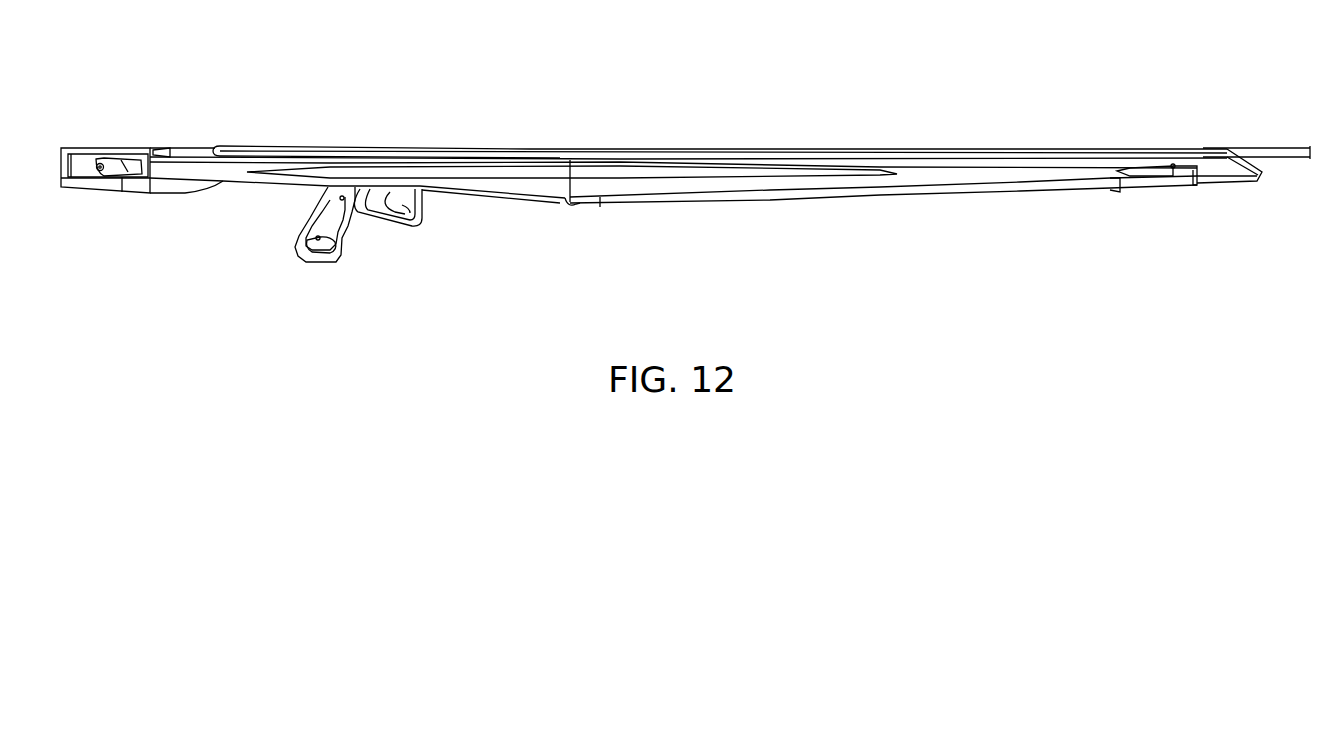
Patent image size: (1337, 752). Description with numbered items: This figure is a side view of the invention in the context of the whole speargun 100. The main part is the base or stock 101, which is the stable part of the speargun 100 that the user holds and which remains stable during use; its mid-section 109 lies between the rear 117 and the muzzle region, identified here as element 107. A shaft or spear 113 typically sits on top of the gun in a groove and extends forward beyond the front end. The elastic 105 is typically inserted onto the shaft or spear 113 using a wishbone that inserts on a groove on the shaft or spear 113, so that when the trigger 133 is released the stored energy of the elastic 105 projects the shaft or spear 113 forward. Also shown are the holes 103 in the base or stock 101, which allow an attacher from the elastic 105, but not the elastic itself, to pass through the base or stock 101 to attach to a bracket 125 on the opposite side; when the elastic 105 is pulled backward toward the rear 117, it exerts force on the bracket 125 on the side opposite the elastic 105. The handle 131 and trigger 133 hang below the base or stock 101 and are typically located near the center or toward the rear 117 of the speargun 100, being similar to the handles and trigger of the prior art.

The speargun 100 is at (572, 68).
The base or stock 101 is at (600, 202).
The hole 103 is at (1168, 177).
The elastic 105 is at (1142, 153).
The muzzle 107 is at (1240, 185).
The mid-section 109 is at (687, 190).
The shaft or spear 113 is at (1262, 148).
The rear 117 is at (101, 148).
The bracket 125 is at (1193, 185).
The handle 131 is at (335, 262).
The trigger 133 is at (415, 205).